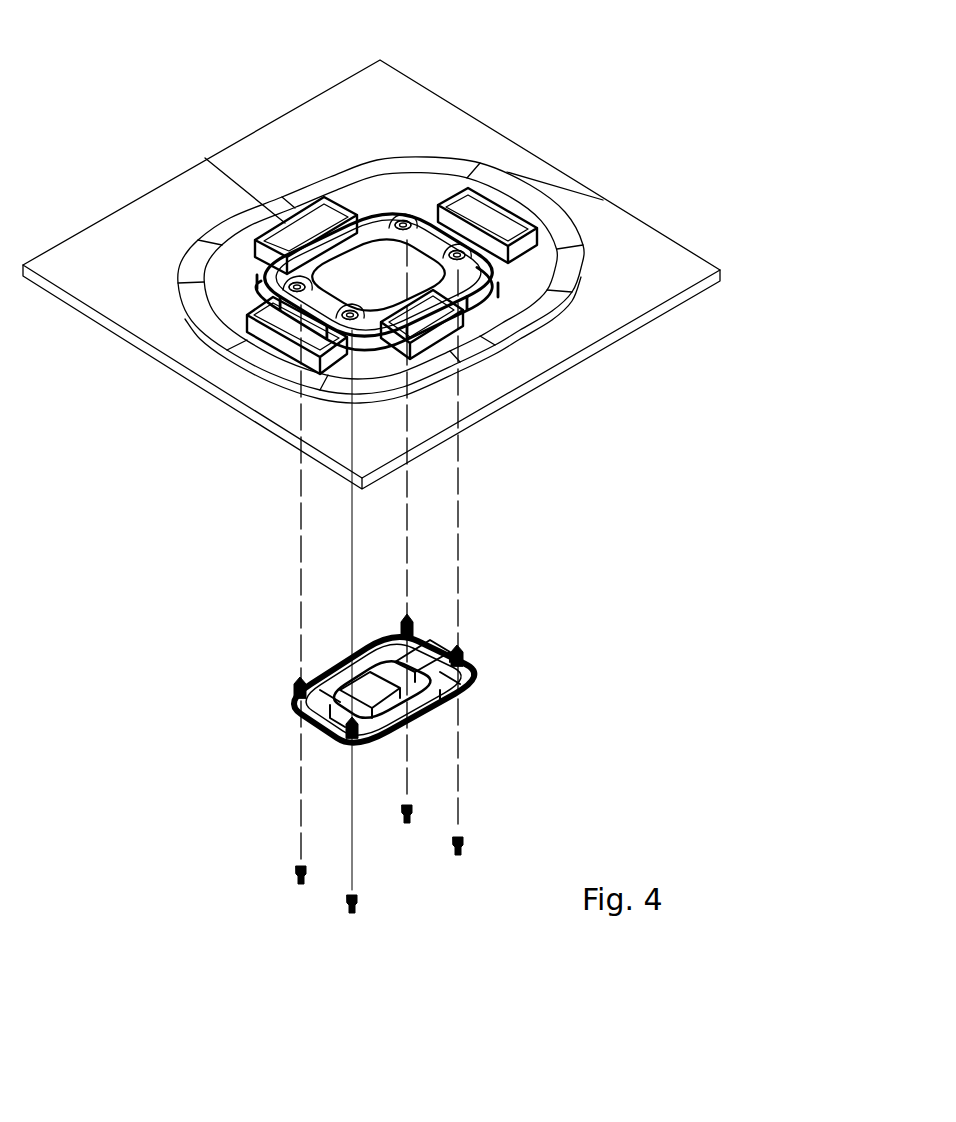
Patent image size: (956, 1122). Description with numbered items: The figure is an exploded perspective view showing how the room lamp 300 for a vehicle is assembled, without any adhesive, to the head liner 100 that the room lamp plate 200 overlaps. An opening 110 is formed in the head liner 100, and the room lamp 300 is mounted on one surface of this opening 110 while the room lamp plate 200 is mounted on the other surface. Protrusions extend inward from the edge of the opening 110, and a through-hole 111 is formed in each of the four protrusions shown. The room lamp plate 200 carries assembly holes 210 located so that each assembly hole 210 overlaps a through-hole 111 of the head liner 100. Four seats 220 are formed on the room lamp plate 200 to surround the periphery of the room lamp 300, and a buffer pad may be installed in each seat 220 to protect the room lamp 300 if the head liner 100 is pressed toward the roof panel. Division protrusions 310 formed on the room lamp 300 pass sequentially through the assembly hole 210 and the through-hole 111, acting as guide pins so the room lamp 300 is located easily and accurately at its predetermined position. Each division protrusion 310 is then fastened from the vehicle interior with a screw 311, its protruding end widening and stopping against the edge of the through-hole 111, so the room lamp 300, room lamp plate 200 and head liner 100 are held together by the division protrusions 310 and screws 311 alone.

The head liner 100 is at (632, 245).
The opening 110 is at (390, 275).
The through-hole 111 is at (458, 252).
The room lamp plate 200 is at (510, 290).
The assembly hole 210 is at (350, 320).
The seat 220 is at (310, 218).
The room lamp 300 is at (485, 678).
The division protrusion 310 is at (463, 653).
The screw 311 is at (301, 885).